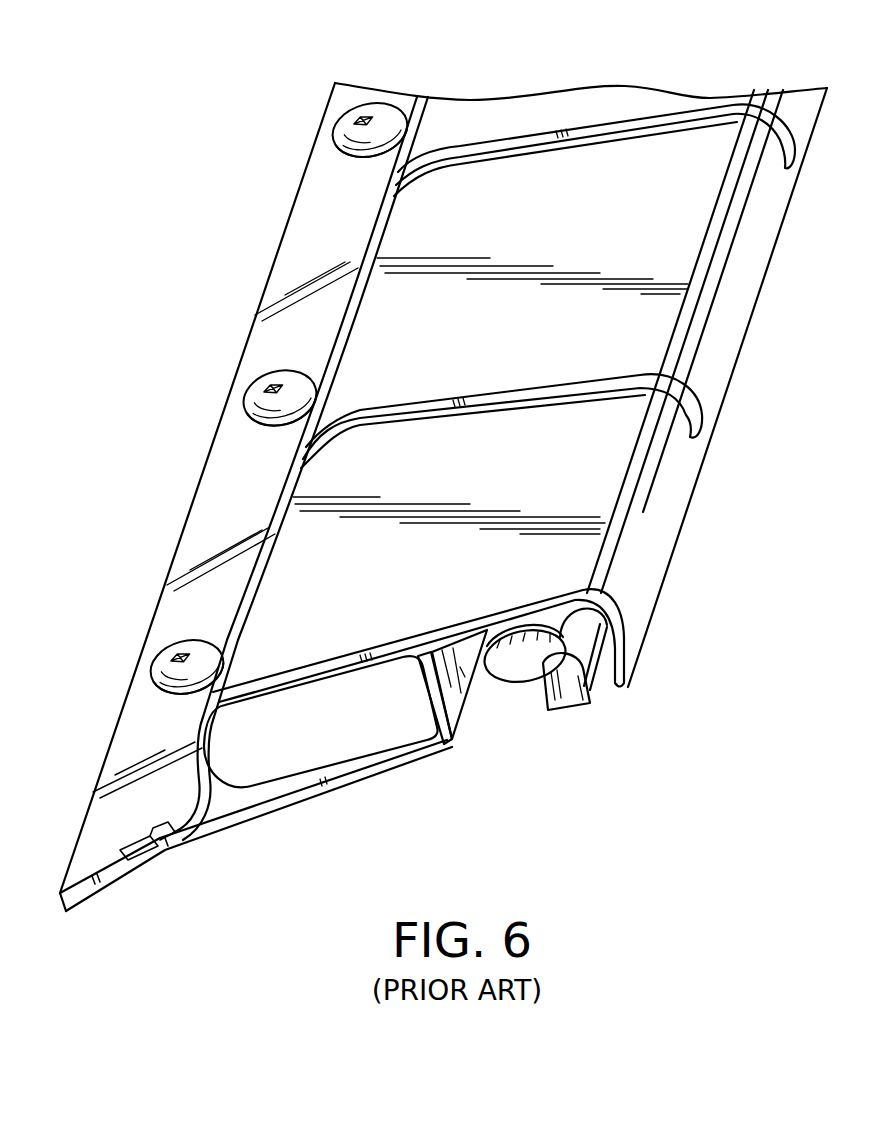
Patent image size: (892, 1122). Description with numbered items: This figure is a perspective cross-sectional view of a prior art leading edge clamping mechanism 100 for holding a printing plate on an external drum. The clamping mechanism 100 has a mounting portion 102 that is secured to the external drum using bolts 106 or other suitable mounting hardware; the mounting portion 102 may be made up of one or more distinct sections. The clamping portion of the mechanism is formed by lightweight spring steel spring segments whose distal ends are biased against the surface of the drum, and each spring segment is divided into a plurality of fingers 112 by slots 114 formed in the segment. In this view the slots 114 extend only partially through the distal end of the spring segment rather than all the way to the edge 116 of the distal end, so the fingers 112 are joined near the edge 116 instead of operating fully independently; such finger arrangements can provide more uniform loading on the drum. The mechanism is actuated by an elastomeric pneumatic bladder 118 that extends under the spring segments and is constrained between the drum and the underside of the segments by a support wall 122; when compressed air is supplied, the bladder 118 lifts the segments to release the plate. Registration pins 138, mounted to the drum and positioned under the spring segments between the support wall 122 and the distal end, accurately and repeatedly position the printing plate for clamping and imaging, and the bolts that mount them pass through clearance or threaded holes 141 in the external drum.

The clamping mechanism 100 is at (252, 86).
The mounting portion 102 is at (140, 754).
The bolts 106 is at (150, 662).
The fingers 112 is at (617, 505).
The slots 114 is at (597, 382).
The edge 116 is at (626, 688).
The pneumatic bladder 118 is at (320, 692).
The support wall 122 is at (432, 652).
The registration pins 138 is at (582, 641).
The holes 141 is at (528, 630).